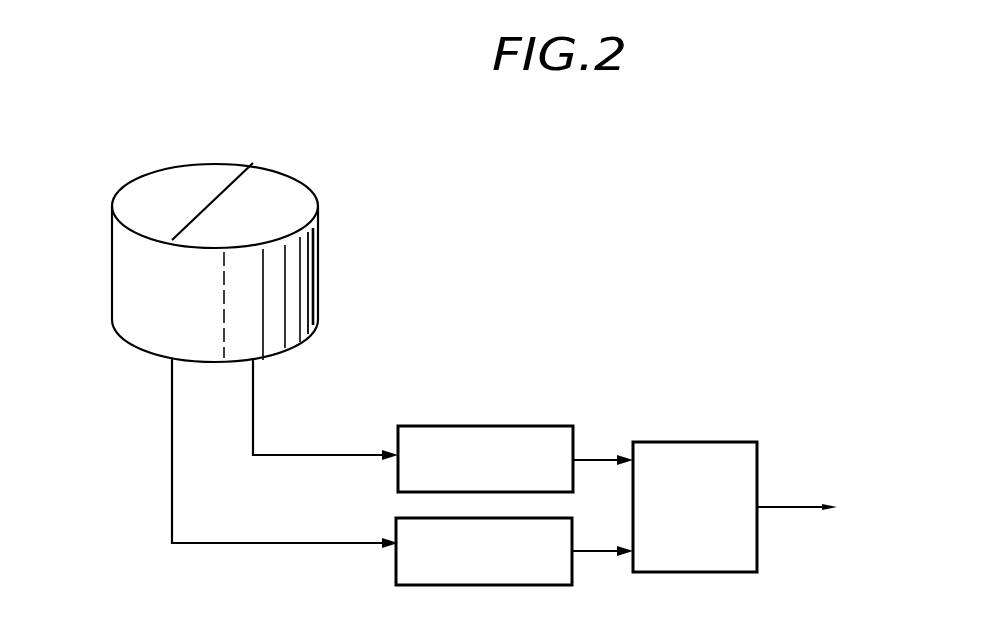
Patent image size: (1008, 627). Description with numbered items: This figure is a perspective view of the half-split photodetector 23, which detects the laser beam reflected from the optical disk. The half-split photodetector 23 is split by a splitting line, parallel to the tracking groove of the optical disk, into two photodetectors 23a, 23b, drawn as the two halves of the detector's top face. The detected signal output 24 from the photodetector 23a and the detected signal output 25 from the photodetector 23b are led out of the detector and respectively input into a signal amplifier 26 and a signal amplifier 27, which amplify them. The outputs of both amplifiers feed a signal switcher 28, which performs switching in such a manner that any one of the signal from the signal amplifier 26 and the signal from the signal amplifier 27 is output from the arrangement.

The half-split photodetector 23 is at (320, 235).
The photodetector 23a is at (285, 198).
The photodetector 23b is at (182, 183).
The detected signal output 24 is at (342, 454).
The detected signal output 25 is at (317, 545).
The signal amplifier 26 is at (497, 427).
The signal amplifier 27 is at (497, 583).
The signal switcher 28 is at (690, 442).